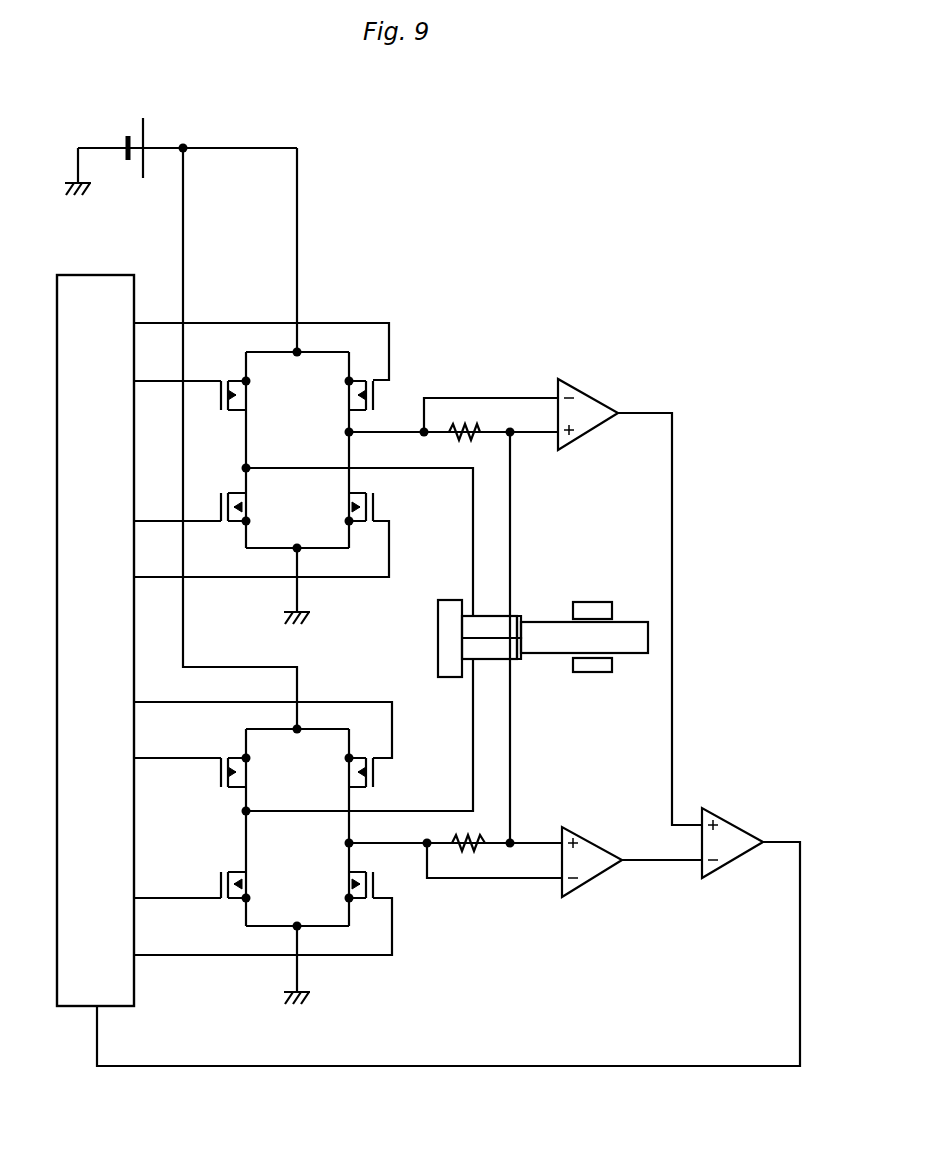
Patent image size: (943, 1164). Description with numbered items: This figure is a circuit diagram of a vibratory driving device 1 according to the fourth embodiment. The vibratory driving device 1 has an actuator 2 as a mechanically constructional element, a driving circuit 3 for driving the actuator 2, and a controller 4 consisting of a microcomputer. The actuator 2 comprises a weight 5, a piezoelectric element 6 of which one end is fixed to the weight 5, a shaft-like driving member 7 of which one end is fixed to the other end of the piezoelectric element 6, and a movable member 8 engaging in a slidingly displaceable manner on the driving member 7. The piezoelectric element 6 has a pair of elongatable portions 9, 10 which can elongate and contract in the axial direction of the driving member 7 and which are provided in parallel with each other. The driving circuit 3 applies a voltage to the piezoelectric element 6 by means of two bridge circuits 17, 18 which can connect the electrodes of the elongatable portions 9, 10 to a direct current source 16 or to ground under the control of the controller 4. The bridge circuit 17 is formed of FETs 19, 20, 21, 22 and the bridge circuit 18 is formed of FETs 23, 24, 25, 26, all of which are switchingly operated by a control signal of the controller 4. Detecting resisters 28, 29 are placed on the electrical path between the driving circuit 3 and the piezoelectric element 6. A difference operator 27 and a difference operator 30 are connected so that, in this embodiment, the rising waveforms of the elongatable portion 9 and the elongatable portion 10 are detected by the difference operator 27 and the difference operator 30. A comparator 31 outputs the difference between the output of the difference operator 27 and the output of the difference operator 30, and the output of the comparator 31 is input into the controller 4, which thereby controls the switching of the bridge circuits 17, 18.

The vibratory driving device 1 is at (527, 175).
The actuator 2 is at (622, 550).
The driving circuit 3 is at (371, 232).
The controller 4 is at (72, 278).
The weight 5 is at (438, 637).
The piezoelectric element 6 is at (492, 612).
The driving member 7 is at (644, 622).
The movable member 8 is at (593, 601).
The elongatable portion 9 is at (518, 618).
The elongatable portion 10 is at (519, 660).
The direct current source 16 is at (128, 140).
The bridge circuit 17 is at (319, 320).
The bridge circuit 18 is at (320, 700).
The FET 19 is at (244, 395).
The FET 20 is at (352, 395).
The FET 21 is at (356, 506).
The FET 22 is at (240, 508).
The FET 23 is at (244, 772).
The FET 24 is at (354, 772).
The FET 25 is at (357, 884).
The FET 26 is at (242, 885).
The difference operator 27 is at (590, 830).
The detecting resister 28 is at (479, 437).
The detecting resister 29 is at (478, 843).
The difference operator 30 is at (582, 384).
The comparator 31 is at (728, 810).